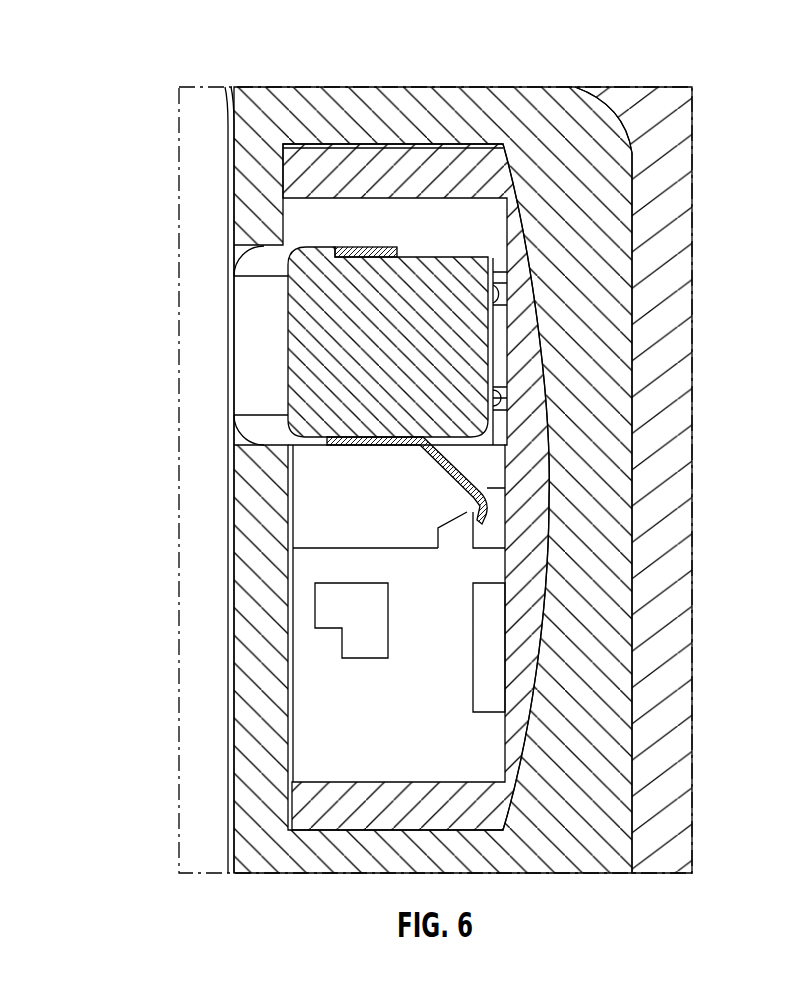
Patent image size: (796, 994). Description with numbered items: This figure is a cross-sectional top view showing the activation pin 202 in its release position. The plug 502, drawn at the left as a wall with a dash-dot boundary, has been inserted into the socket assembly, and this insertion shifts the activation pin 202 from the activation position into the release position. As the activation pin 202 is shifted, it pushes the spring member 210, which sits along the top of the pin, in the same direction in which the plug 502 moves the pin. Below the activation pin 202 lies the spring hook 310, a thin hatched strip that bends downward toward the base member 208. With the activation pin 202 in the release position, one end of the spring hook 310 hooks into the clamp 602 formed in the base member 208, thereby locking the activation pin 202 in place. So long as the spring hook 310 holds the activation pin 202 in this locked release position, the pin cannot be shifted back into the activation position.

The activation pin 202 is at (307, 340).
The base member 208 is at (315, 752).
The spring member 210 is at (383, 247).
The spring hook 310 is at (460, 472).
The plug 502 is at (198, 540).
The clamp 602 is at (455, 535).